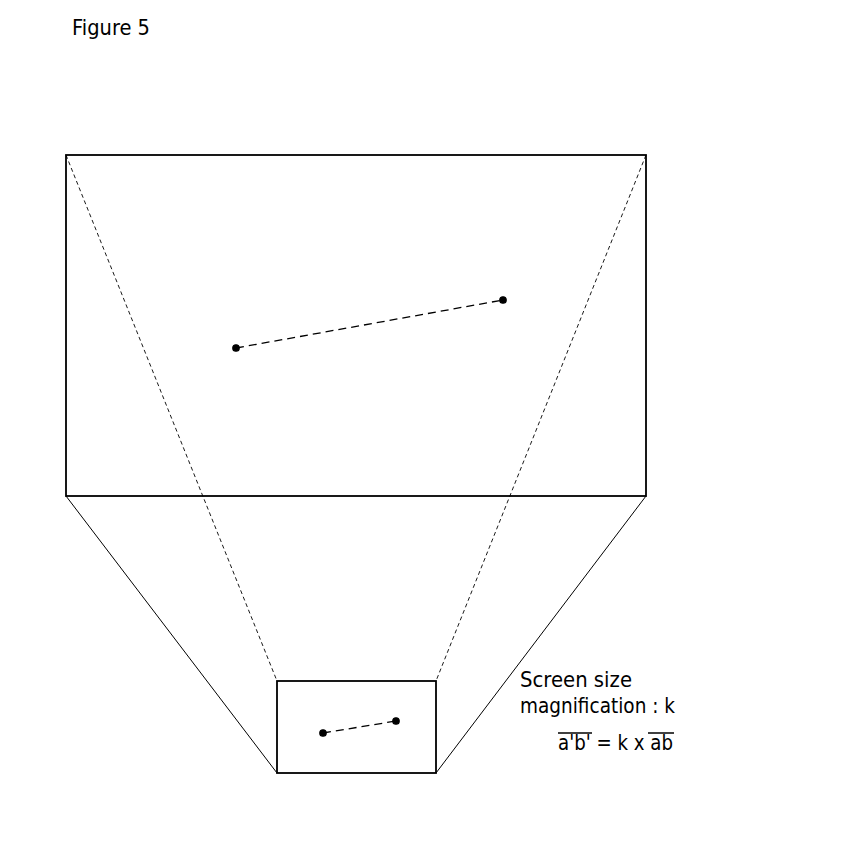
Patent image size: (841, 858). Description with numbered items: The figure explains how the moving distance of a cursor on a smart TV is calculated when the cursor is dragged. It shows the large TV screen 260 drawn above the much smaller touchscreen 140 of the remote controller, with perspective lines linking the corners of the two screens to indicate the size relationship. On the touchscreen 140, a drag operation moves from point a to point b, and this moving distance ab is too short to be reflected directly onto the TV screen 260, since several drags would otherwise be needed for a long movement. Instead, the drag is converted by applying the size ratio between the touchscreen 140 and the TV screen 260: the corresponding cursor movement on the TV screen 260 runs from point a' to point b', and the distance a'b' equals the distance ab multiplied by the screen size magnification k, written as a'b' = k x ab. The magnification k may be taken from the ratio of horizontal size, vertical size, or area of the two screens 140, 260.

The TV screen 260 is at (647, 172).
The touchscreen 140 is at (277, 727).
The start point of drag on touchscreen a is at (313, 685).
The end point of drag on touchscreen b is at (388, 679).
The start point of cursor movement on TV screen a' is at (211, 225).
The end point of cursor movement on TV screen b' is at (481, 201).